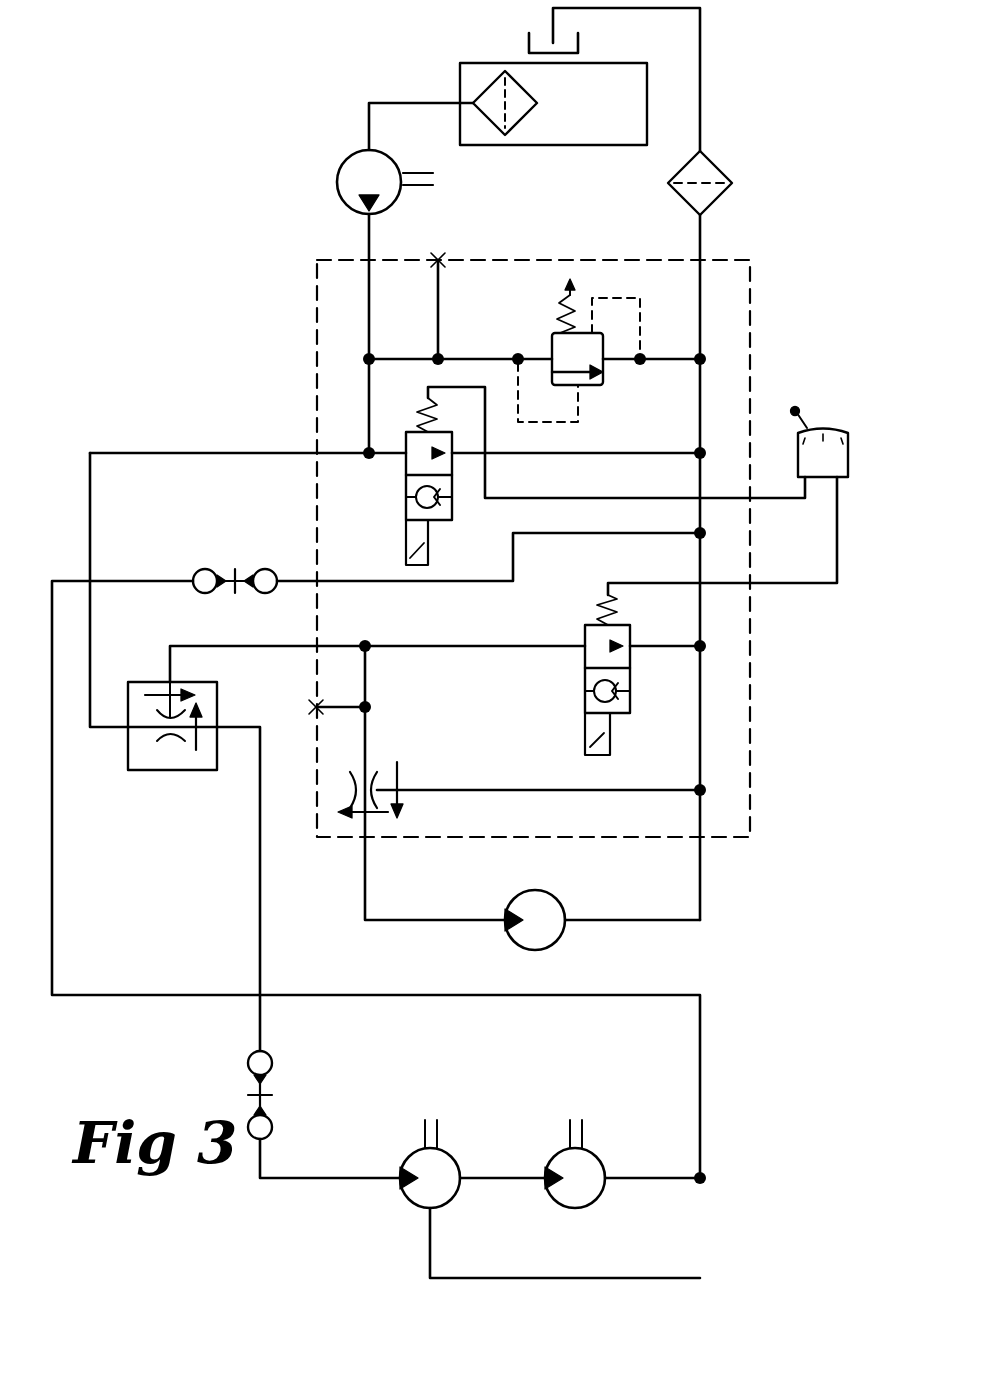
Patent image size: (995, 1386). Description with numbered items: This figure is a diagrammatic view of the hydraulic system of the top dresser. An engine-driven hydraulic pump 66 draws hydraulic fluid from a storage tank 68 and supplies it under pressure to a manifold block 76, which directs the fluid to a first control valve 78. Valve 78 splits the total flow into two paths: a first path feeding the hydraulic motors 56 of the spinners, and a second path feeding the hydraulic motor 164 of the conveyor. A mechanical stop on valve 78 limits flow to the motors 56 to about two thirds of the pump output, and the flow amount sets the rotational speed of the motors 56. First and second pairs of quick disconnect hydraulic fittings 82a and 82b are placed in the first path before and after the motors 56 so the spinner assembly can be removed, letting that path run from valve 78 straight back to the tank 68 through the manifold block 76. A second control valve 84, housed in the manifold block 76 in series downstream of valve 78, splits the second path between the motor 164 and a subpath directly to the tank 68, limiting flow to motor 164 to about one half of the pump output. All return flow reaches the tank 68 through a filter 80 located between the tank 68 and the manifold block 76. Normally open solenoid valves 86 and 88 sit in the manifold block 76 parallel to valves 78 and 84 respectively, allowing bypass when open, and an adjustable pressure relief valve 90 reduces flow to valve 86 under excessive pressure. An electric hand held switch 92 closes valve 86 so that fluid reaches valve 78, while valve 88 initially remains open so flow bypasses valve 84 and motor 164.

The hydraulic motors 56 is at (455, 1162).
The hydraulic pump 66 is at (351, 158).
The storage tank 68 is at (477, 63).
The manifold block 76 is at (317, 300).
The first control valve 78 is at (145, 770).
The filter 80 is at (722, 176).
The first pair of quick disconnect hydraulic fittings 82a is at (268, 1093).
The second pair of quick disconnect hydraulic fittings 82b is at (235, 572).
The second control valve 84 is at (373, 772).
The solenoid valve 86 is at (406, 488).
The solenoid valve 88 is at (585, 678).
The adjustable pressure relief valve 90 is at (552, 341).
The electric hand held switch 92 is at (815, 428).
The hydraulic motor 164 is at (548, 894).